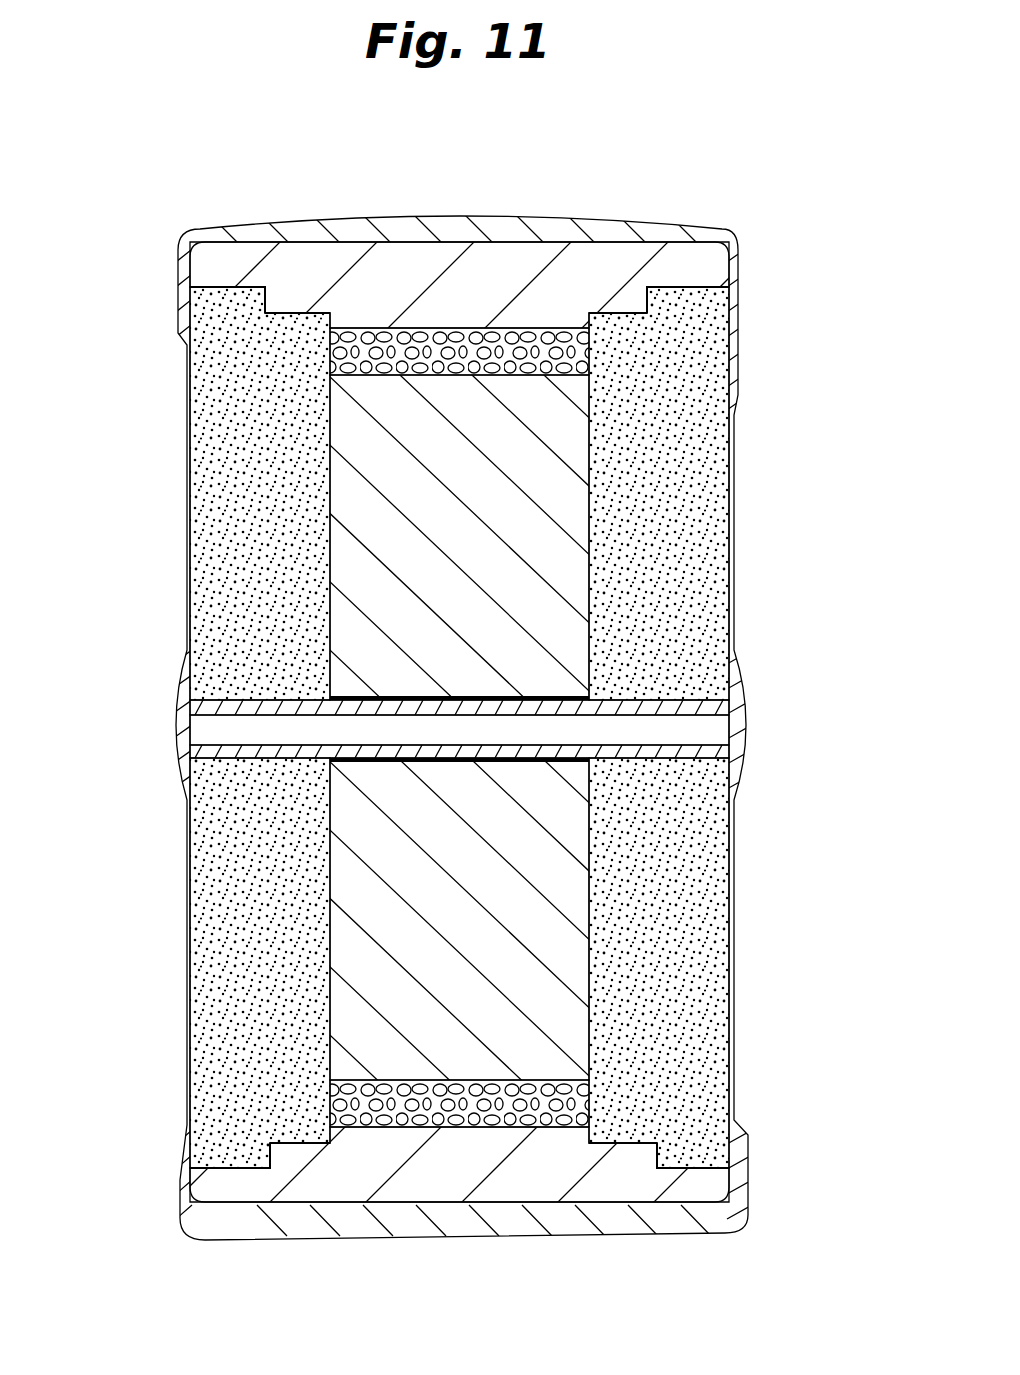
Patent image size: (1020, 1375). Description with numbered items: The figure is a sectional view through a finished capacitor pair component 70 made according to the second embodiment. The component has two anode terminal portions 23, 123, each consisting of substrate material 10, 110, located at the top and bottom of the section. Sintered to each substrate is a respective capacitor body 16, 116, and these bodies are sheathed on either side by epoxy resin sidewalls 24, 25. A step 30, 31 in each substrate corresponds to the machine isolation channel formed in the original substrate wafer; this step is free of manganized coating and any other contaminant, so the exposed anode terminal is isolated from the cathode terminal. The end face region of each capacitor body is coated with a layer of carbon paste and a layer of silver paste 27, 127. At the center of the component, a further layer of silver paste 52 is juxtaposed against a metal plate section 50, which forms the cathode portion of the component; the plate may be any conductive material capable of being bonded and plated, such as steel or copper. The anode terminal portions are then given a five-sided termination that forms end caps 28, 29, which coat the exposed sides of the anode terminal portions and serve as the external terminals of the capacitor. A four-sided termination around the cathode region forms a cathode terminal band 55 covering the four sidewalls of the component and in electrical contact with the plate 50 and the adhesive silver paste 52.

The substrate material 10 is at (540, 1200).
The capacitor body 16 is at (585, 890).
The anode terminal portion 23 is at (435, 1170).
The epoxy resin sidewall 24 is at (215, 440).
The epoxy resin sidewall 25 is at (700, 505).
The silver paste layer 27 is at (540, 763).
The end cap 28 is at (252, 228).
The end cap 29 is at (675, 1222).
The step 30 is at (262, 290).
The step 31 is at (262, 300).
The metal plate section 50 is at (708, 725).
The silver paste layer 52 is at (627, 702).
The cathode terminal band 55 is at (424, 723).
The component 70 is at (515, 752).
The substrate material 110 is at (507, 258).
The capacitor body 116 is at (355, 530).
The anode terminal portion 123 is at (392, 277).
The silver paste layer 127 is at (333, 697).